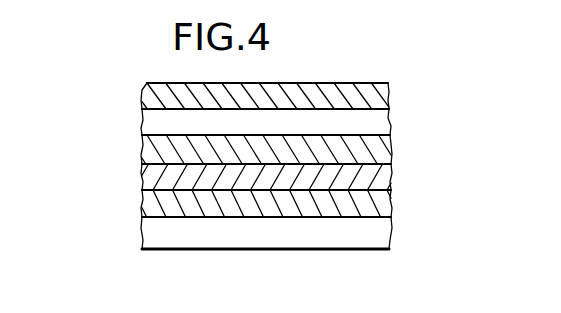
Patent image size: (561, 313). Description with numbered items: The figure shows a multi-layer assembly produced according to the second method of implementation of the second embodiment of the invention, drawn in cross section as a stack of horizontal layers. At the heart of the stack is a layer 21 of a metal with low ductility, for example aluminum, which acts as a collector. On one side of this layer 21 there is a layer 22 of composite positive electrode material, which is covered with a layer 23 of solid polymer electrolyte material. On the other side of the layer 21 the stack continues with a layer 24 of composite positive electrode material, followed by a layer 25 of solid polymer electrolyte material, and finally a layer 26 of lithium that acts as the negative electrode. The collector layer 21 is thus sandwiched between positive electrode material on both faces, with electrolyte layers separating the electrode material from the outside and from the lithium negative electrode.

The layer of a metal with low ductility 21 is at (142, 183).
The layer of composite positive electrode material 22 is at (148, 203).
The layer of solid polymer electrolyte material 23 is at (143, 238).
The layer of composite positive electrode material 24 is at (392, 149).
The layer of solid polymer electrolyte material 25 is at (384, 122).
The layer of lithium 26 is at (384, 94).